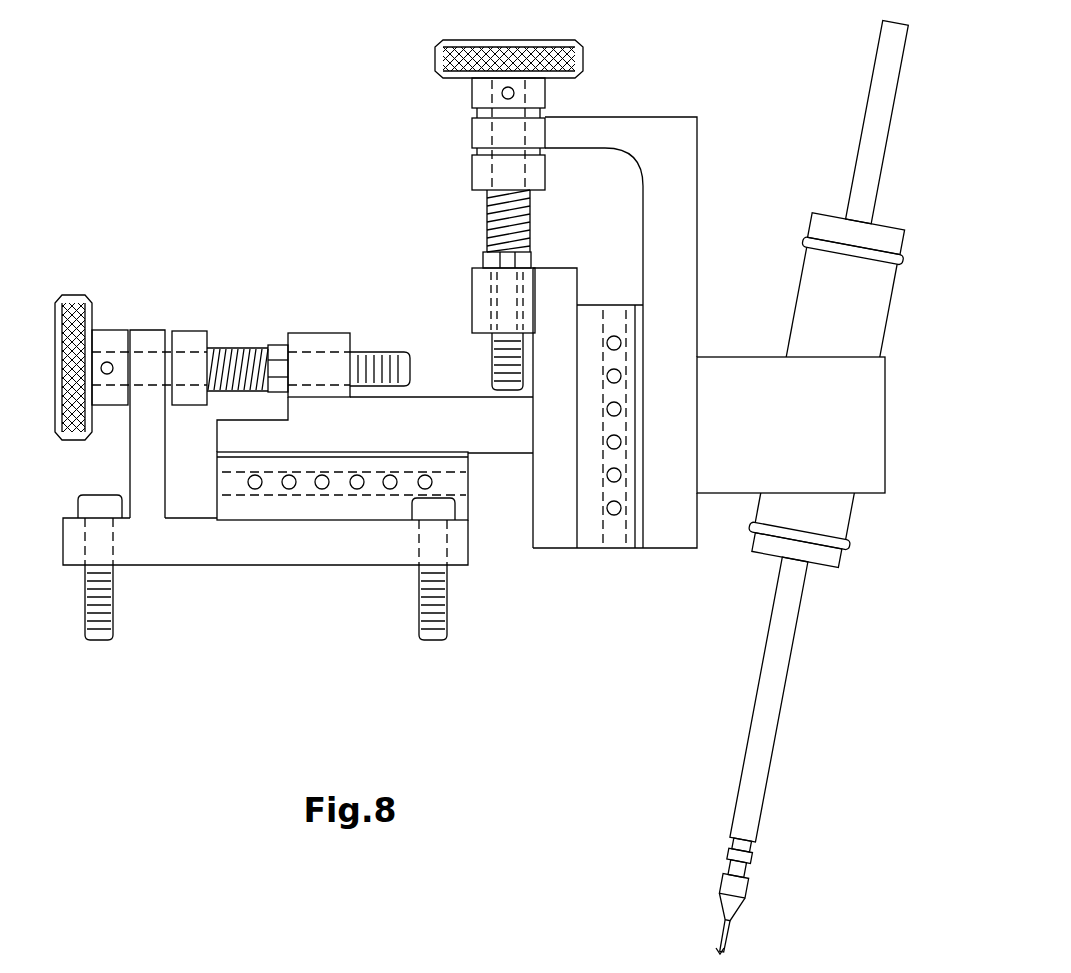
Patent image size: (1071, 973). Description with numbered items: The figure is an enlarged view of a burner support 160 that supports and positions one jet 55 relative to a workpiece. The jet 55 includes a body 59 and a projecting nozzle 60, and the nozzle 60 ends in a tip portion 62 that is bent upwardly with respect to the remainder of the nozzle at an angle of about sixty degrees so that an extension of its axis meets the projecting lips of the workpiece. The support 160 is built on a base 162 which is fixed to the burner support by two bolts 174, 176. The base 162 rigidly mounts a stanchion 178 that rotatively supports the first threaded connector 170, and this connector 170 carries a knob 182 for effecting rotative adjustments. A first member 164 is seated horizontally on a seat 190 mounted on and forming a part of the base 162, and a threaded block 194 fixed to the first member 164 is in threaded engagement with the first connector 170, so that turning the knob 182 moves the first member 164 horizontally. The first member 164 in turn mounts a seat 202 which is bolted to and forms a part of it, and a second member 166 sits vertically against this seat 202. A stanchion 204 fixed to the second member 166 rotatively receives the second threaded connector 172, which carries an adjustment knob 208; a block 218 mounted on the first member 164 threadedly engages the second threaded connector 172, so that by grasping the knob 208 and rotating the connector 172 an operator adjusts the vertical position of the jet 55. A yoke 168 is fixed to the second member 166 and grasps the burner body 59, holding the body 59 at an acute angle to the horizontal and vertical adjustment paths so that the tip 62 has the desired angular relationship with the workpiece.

The jet 55 is at (915, 262).
The body 59 is at (757, 763).
The projecting nozzle 60 is at (727, 930).
The tip portion 62 is at (719, 952).
The support 160 is at (302, 597).
The base 162 is at (203, 540).
The first member 164 is at (493, 430).
The second member 166 is at (675, 312).
The yoke 168 is at (728, 478).
The first threaded connector 170 is at (240, 355).
The second threaded connector 172 is at (487, 235).
The bolt 174 is at (93, 605).
The bolt 176 is at (447, 592).
The stanchion 178 is at (135, 470).
The knob 182 is at (97, 312).
The seat 190 is at (232, 505).
The threaded block 194 is at (338, 335).
The seat 202 is at (607, 538).
The stanchion 204 is at (620, 133).
The adjustment knob 208 is at (475, 87).
The block 218 is at (470, 300).